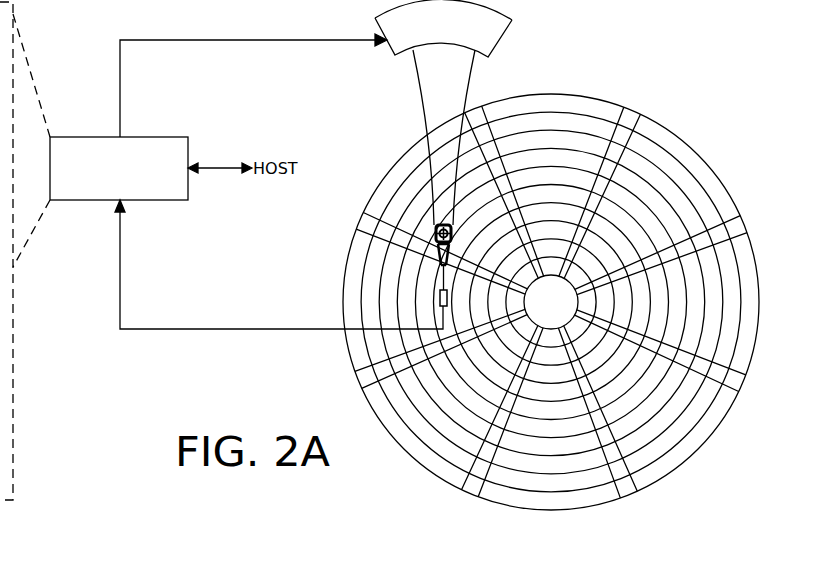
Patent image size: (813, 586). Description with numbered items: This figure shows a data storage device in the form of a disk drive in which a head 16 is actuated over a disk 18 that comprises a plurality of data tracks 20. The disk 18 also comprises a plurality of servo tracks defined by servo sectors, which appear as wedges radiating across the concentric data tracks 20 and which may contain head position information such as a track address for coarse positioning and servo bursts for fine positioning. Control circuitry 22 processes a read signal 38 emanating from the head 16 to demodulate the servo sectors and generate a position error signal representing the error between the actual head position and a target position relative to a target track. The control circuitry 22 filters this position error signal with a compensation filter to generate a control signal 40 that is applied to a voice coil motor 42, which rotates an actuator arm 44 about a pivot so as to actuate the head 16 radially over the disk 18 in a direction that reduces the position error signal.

The head 16 is at (437, 301).
The disk 18 is at (695, 141).
The data tracks 20 is at (550, 122).
The control circuitry 22 is at (155, 137).
The read signal 38 is at (243, 329).
The control signal 40 is at (120, 72).
The voice coil motor 42 is at (392, 50).
The actuator arm 44 is at (426, 123).